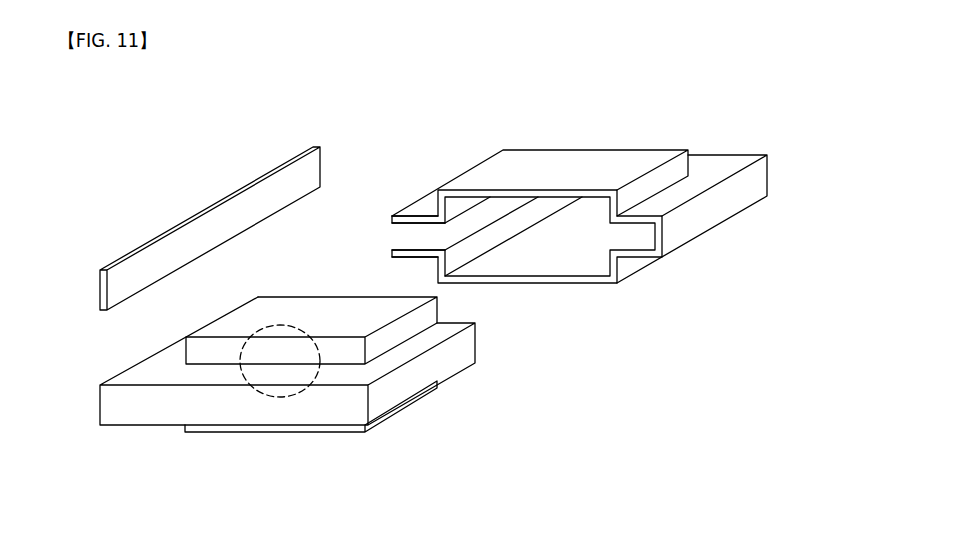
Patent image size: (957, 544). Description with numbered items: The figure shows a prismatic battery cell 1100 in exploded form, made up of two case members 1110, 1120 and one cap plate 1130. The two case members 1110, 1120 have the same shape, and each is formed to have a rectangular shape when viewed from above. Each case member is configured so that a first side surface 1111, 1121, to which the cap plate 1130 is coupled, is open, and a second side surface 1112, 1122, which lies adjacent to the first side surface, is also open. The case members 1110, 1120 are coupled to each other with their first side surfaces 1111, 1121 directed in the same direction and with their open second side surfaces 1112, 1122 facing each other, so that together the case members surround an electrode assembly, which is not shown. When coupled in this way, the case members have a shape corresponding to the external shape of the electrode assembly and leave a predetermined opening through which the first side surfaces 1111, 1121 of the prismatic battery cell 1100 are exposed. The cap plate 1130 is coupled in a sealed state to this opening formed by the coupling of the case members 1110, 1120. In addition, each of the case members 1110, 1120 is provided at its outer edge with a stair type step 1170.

The prismatic battery cell 1100 is at (147, 133).
The case member 1110 is at (574, 225).
The first side surface 1111 is at (397, 238).
The second side surface 1112 is at (567, 240).
The case member 1120 is at (310, 396).
The first side surface 1121 is at (140, 362).
The second side surface 1122 is at (458, 320).
The cap plate 1130 is at (310, 147).
The stair type step 1170 is at (303, 390).